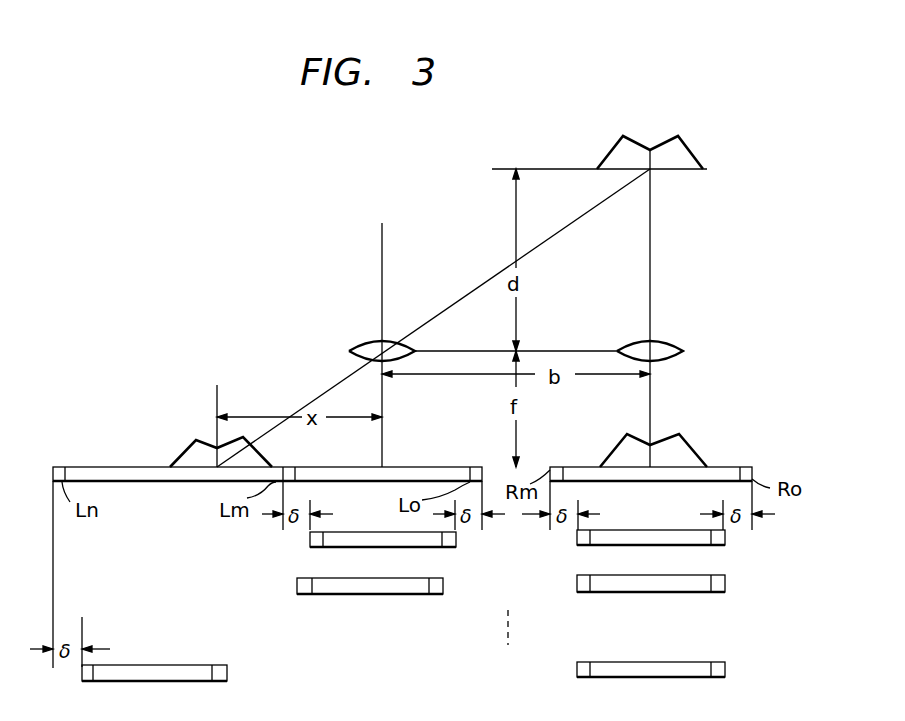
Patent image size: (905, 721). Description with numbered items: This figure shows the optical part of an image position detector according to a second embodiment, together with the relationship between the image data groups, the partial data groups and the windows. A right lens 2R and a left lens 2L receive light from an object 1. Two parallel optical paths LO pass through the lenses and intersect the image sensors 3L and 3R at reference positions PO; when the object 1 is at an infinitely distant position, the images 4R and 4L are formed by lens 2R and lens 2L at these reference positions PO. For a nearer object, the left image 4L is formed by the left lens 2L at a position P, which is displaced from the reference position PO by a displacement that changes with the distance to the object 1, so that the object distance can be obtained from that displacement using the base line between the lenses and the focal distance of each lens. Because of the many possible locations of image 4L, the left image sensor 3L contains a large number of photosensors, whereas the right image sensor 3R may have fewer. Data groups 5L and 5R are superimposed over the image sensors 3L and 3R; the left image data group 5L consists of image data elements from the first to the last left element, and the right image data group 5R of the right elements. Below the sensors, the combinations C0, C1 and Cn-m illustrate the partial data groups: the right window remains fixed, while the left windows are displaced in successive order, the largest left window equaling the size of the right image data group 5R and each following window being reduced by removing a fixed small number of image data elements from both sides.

The object 1 is at (692, 152).
The lens 2L is at (357, 344).
The lens 2R is at (678, 344).
The image sensor 3L is at (259, 457).
The image data group 5L is at (60, 467).
The image sensor 3R is at (690, 457).
The image data group 5R is at (752, 469).
The image 4L is at (181, 456).
The image 4R is at (612, 448).
The optical path LO is at (382, 252).
The reference position PO is at (385, 465).
The position P is at (217, 470).
The partial data group combination C0 is at (517, 542).
The partial data group combination C1 is at (511, 587).
The partial data group combination Cn-m is at (403, 672).